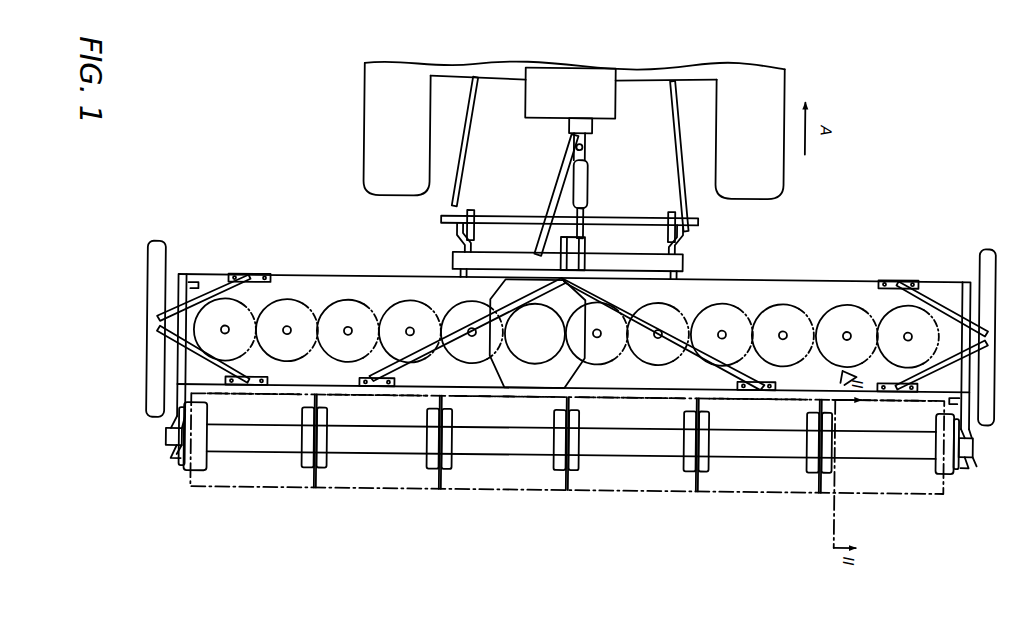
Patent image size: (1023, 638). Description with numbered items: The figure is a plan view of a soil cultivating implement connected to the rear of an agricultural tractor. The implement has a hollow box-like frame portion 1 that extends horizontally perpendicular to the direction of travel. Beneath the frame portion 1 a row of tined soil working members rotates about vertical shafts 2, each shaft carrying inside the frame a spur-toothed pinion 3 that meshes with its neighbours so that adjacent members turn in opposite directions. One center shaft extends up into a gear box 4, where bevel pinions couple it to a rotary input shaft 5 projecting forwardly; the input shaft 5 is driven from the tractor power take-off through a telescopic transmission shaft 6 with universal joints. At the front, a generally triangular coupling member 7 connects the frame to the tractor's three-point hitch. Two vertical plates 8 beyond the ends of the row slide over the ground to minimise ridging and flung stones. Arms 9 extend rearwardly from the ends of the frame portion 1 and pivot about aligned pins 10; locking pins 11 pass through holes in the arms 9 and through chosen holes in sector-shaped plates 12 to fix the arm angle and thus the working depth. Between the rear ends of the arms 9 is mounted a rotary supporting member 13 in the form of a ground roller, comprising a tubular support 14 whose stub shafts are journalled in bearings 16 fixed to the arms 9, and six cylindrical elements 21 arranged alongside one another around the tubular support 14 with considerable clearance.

The frame portion 1 is at (412, 278).
The shafts 2 is at (292, 318).
The pinions 3 is at (350, 318).
The gear box 4 is at (535, 350).
The rotary input shaft 5 is at (527, 263).
The telescopic transmission shaft 6 is at (548, 207).
The coupling member 7 is at (640, 262).
The plates 8 is at (150, 280).
The arms 9 is at (173, 421).
The pins 10 is at (979, 277).
The locking pins 11 is at (180, 283).
The sector-shaped plates 12 is at (204, 283).
The rotary supporting member 13 is at (687, 494).
The tubular support 14 is at (504, 450).
The bearings 16 is at (175, 456).
The cylindrical elements 21 is at (351, 490).